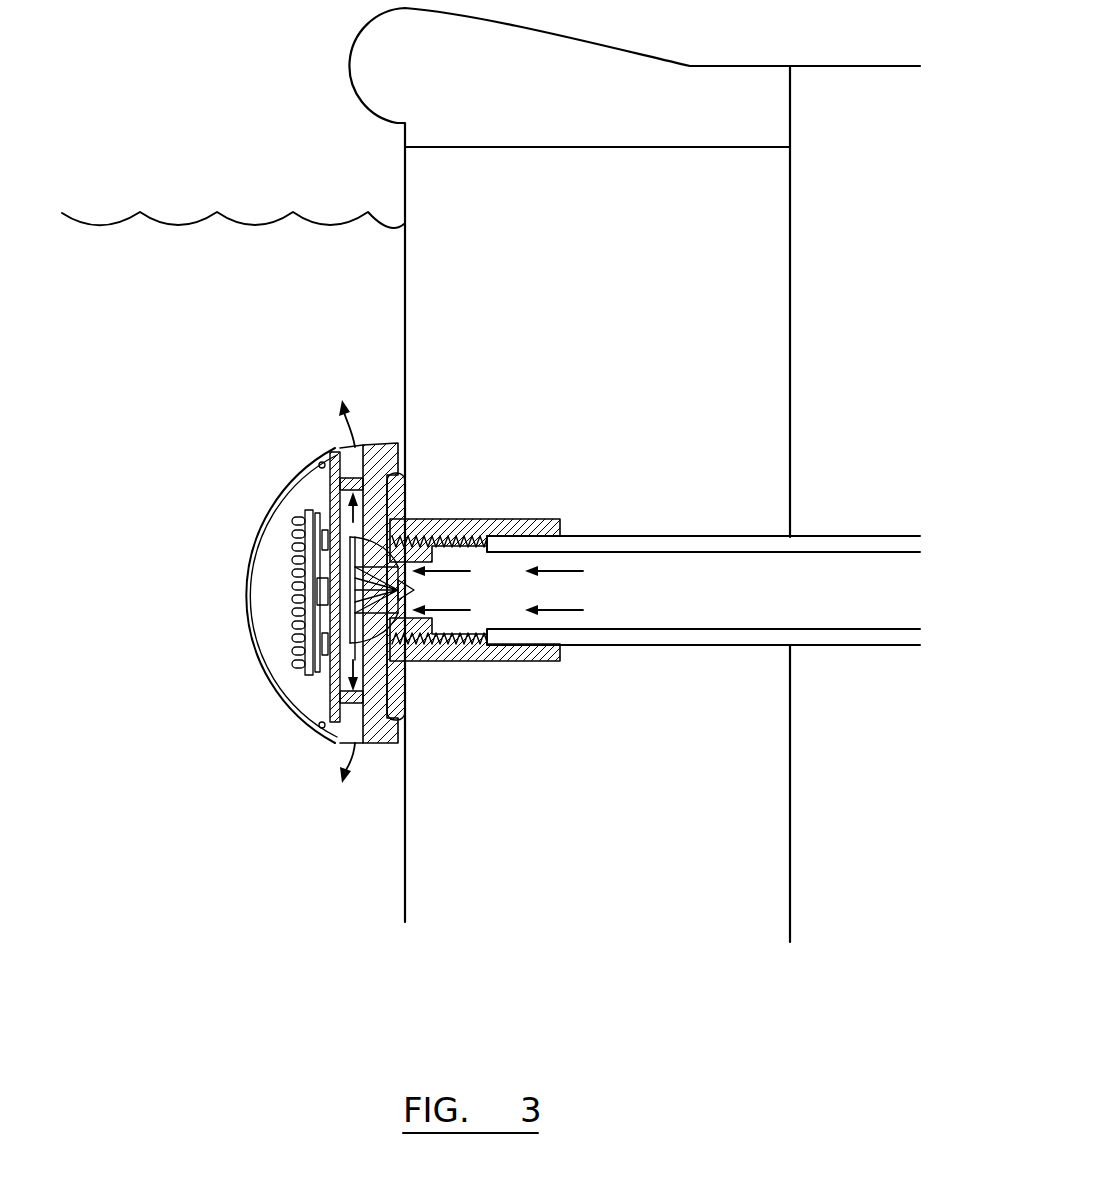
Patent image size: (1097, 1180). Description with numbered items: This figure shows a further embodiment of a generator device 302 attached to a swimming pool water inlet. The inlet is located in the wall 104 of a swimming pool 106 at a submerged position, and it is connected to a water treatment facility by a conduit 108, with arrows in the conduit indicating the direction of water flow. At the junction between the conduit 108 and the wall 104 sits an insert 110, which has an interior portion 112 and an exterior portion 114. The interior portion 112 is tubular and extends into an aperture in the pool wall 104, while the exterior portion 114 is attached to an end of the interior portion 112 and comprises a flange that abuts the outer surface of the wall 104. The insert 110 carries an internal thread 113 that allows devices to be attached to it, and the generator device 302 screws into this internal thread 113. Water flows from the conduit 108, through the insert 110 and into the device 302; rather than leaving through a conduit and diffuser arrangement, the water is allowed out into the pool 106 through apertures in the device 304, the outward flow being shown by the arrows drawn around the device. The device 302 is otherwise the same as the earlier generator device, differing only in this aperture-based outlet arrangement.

The wall 104 is at (622, 303).
The swimming pool 106 is at (210, 349).
The conduit 108 is at (853, 545).
The insert 110 is at (433, 668).
The interior portion 112 is at (528, 503).
The internal thread 113 is at (470, 560).
The exterior portion 114 is at (426, 498).
The generator device 302 is at (218, 614).
The apertures in the device 304 is at (372, 440).